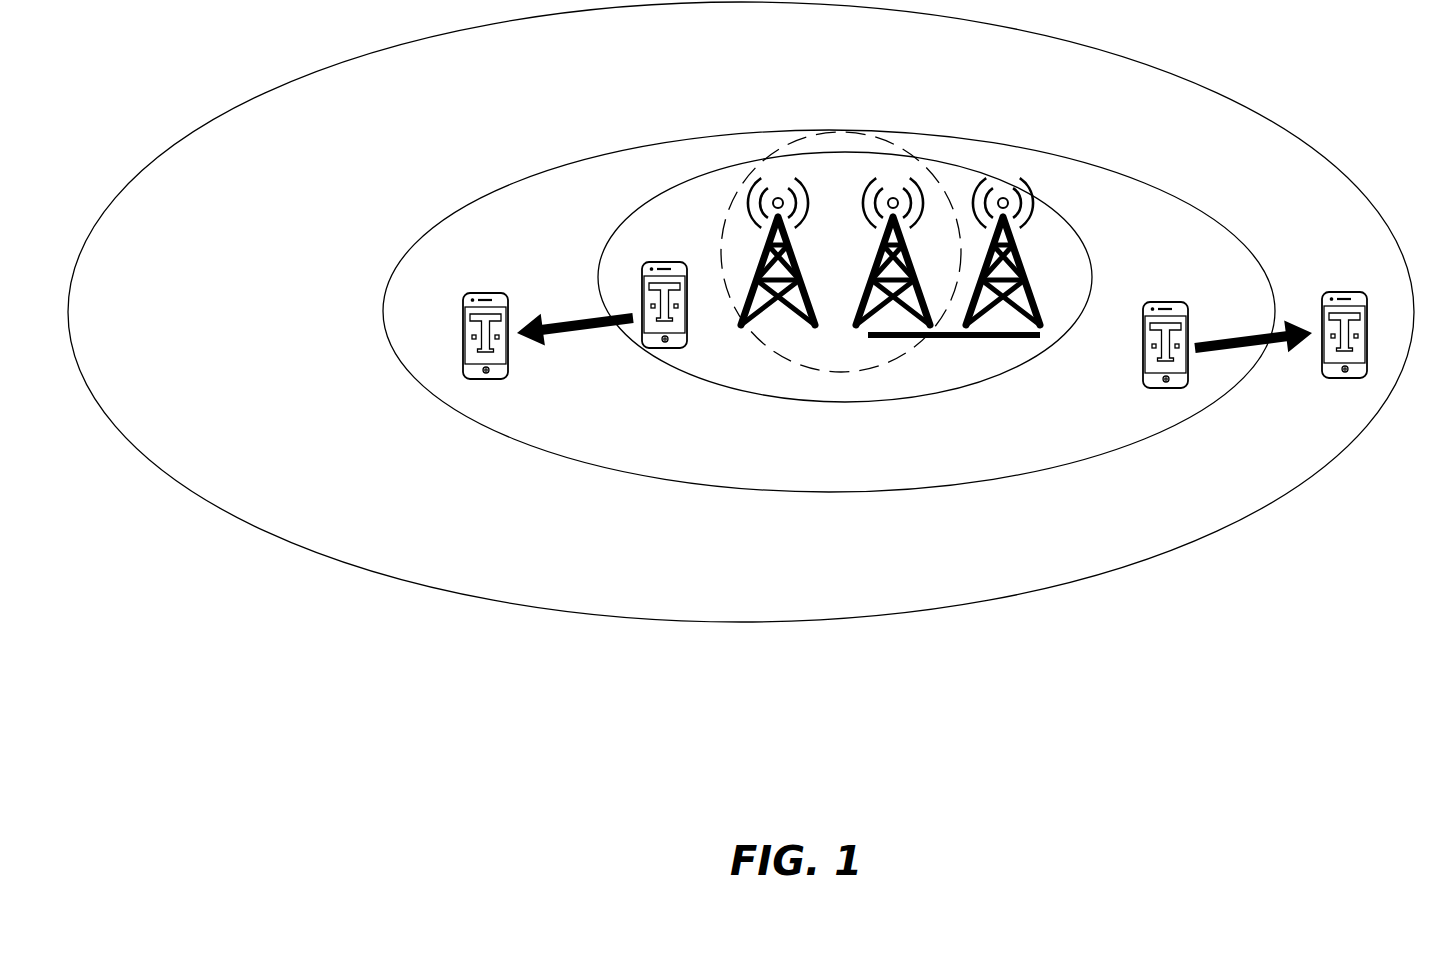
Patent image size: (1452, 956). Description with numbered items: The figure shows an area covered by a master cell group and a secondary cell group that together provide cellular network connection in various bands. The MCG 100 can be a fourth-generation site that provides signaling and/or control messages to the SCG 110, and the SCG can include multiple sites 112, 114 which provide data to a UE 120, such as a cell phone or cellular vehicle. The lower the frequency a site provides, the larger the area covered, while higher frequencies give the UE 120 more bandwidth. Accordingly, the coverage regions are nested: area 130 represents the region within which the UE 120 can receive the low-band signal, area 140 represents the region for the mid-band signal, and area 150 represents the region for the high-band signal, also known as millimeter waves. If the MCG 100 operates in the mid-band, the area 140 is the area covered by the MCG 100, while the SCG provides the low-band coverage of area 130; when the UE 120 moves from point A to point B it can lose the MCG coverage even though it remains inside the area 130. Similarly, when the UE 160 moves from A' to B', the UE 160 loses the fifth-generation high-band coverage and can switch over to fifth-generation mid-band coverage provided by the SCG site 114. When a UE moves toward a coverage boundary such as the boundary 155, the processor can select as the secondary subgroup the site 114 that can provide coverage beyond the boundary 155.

The master cell group (MCG) 100 is at (1027, 277).
The secondary cell group (SCG) 110 is at (720, 270).
The SCG site 112 is at (873, 290).
The SCG site 114 is at (738, 318).
The user equipment (UE) 120 is at (1168, 302).
The low-band coverage area 130 is at (180, 147).
The mid-band coverage area 140 is at (492, 200).
The high-band coverage area 150 is at (822, 304).
The boundary 155 is at (890, 400).
The user equipment (UE) 160 is at (465, 375).